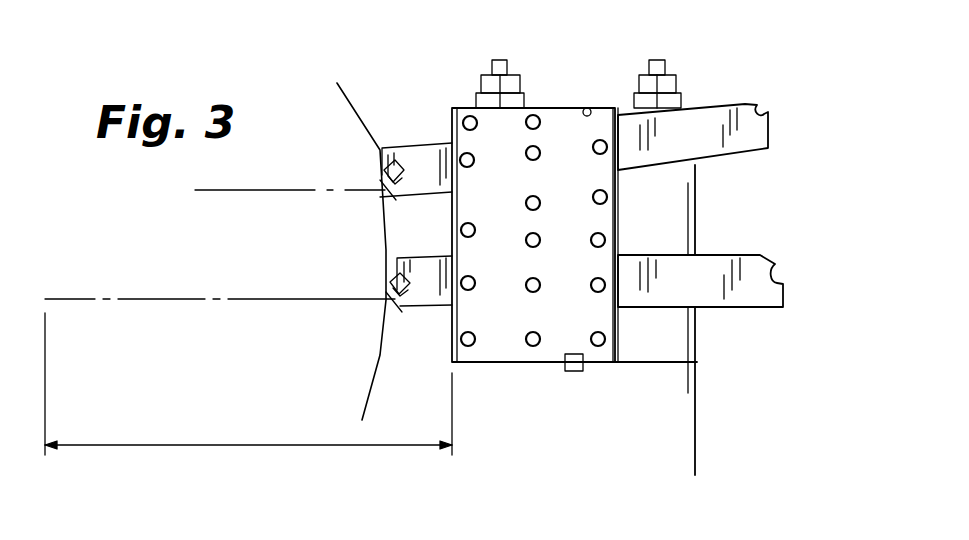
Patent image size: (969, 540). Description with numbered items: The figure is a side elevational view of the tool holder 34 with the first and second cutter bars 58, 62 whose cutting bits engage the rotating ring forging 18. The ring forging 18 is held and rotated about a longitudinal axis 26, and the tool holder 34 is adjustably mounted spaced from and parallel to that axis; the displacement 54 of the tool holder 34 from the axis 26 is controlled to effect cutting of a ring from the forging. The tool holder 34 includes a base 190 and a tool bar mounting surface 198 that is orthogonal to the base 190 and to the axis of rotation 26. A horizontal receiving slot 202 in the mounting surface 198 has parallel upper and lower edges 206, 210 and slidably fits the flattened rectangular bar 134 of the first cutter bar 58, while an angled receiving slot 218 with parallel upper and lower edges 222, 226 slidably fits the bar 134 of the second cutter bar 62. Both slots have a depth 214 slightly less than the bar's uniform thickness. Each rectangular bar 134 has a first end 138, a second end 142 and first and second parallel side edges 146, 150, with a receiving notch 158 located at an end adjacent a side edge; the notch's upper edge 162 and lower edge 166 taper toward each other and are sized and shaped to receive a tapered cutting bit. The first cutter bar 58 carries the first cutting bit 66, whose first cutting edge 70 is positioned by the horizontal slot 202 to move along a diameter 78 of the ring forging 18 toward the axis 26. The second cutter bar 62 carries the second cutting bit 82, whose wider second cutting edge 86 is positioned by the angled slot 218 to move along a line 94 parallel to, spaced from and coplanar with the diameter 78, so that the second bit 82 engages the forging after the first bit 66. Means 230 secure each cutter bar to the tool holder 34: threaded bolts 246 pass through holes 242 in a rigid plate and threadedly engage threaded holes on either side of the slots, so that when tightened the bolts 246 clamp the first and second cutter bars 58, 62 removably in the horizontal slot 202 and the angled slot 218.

The ring forging 18 is at (347, 122).
The longitudinal axis 26 is at (45, 299).
The tool holder 34 is at (697, 362).
The displacement 54 is at (258, 445).
The first cutter bar 58 is at (767, 310).
The second cutter bar 62 is at (745, 148).
The first cutting bit 66 is at (400, 320).
The first cutting edge 70 is at (390, 318).
The diameter 78 is at (146, 299).
The second cutting bit 82 is at (400, 200).
The second cutting edge 86 is at (377, 207).
The line 94 is at (247, 190).
The flattened rectangular bar 134 is at (757, 137).
The first end 138 is at (382, 143).
The second end 142 is at (762, 115).
The first side edge 146 is at (718, 108).
The second side edge 150 is at (718, 160).
The receiving notch 158 is at (760, 113).
The upper edge 162 is at (783, 270).
The lower edge 166 is at (778, 264).
The base 190 is at (685, 457).
The tool bar mounting surface 198 is at (610, 362).
The horizontal receiving slot 202 is at (626, 362).
The upper edge 206 is at (633, 254).
The lower edge 210 is at (667, 363).
The depth 214 is at (658, 244).
The angled receiving slot 218 is at (641, 176).
The upper edge 222 is at (628, 108).
The lower edge 226 is at (662, 167).
The means for securing 230 is at (483, 362).
The holes 242 is at (527, 362).
The threaded bolts 246 is at (543, 106).